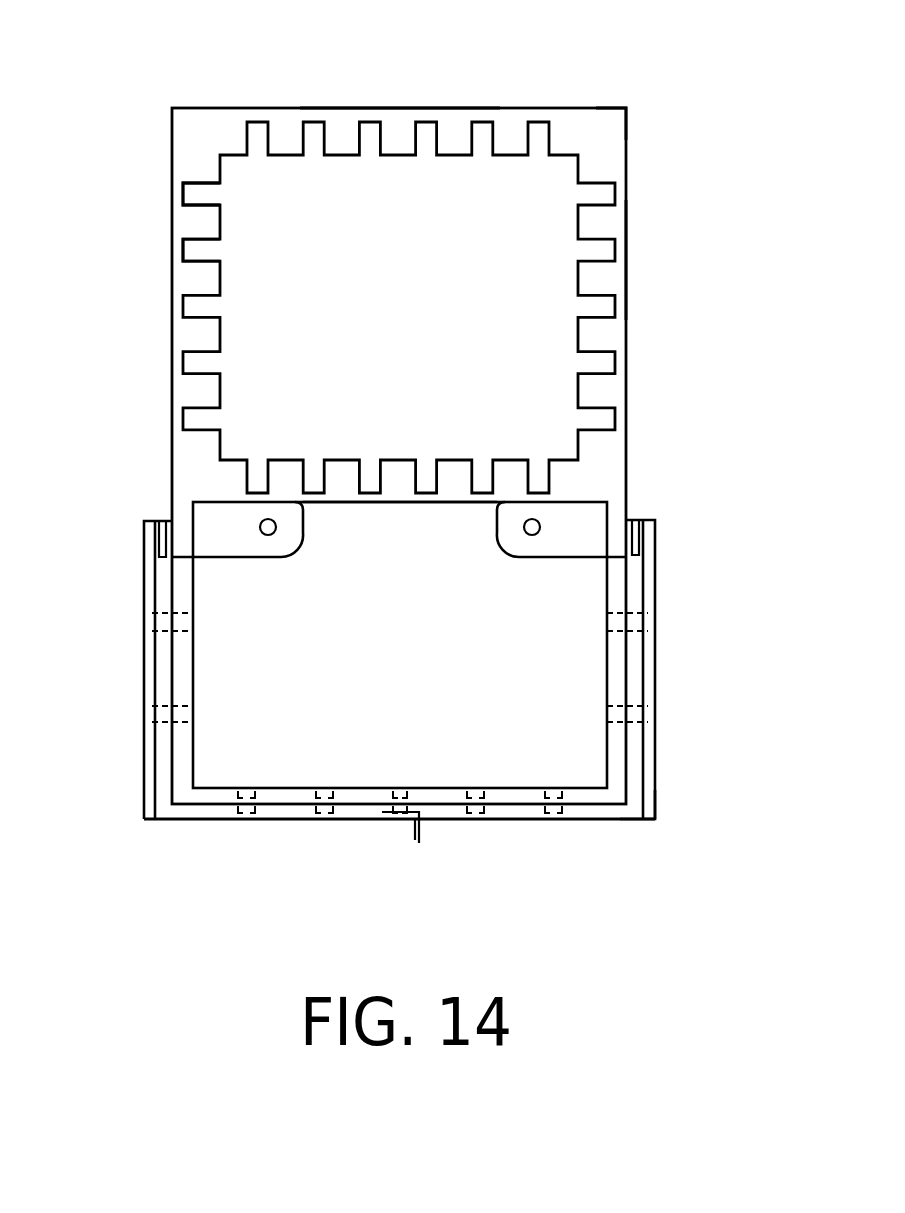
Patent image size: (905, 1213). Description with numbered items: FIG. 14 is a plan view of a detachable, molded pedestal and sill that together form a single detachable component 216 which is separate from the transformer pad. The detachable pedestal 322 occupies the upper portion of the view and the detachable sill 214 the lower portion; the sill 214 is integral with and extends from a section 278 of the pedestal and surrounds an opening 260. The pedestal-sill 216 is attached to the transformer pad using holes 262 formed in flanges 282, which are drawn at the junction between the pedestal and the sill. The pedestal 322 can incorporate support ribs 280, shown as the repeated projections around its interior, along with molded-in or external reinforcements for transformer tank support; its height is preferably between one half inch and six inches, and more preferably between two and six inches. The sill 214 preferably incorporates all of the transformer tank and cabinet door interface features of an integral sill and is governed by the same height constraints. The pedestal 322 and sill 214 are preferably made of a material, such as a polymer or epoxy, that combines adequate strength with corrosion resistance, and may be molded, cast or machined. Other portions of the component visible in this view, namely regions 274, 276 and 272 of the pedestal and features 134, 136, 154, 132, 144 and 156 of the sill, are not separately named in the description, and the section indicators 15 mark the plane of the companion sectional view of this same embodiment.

The detachable pedestal-sill component 216 is at (684, 358).
The detachable pedestal 322 is at (630, 104).
The top edge of frame 274 is at (398, 108).
The side edge of frame 276 is at (627, 259).
The toothed contact carrier opening 272 is at (170, 322).
The support ribs 280 is at (192, 190).
The opening 260 is at (560, 738).
The section of the pedestal 278 is at (403, 504).
The flanges 282 is at (297, 542).
The holes 262 is at (265, 536).
The left side wall 134 is at (144, 572).
The right side wall 136 is at (655, 568).
The slots in side walls 154 is at (165, 520).
The bottom wall 132 is at (283, 821).
The center tab 144 is at (418, 826).
The latch clips 156 is at (185, 716).
The detachable sill 214 is at (657, 822).
The section line 15- 15 is at (207, 697).